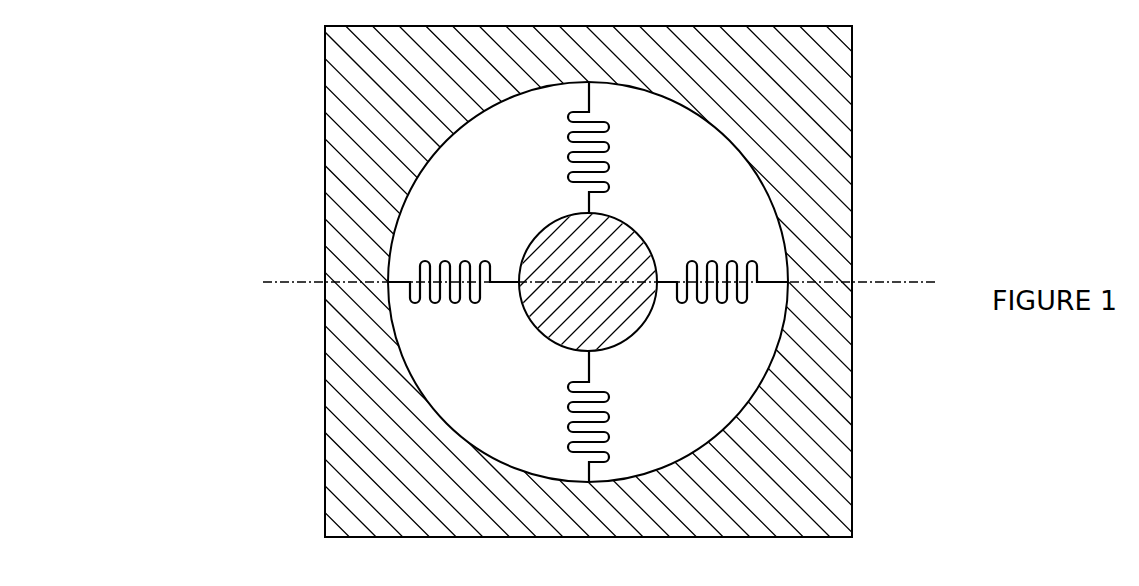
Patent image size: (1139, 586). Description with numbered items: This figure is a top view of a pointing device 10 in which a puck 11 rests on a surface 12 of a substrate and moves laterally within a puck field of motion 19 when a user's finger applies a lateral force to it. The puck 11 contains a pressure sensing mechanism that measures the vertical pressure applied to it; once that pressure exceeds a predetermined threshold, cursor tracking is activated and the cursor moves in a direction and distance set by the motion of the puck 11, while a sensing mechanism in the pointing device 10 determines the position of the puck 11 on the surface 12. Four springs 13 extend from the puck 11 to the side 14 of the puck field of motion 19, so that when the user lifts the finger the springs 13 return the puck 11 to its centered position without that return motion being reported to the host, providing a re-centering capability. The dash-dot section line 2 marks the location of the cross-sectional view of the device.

The pointing device 10 is at (182, 103).
The puck 11 is at (628, 236).
The surface 12 is at (689, 424).
The springs 13 is at (738, 303).
The side of the puck field of motion 14 is at (845, 460).
The puck field of motion 19 is at (729, 191).
The line 2- 2 is at (277, 283).